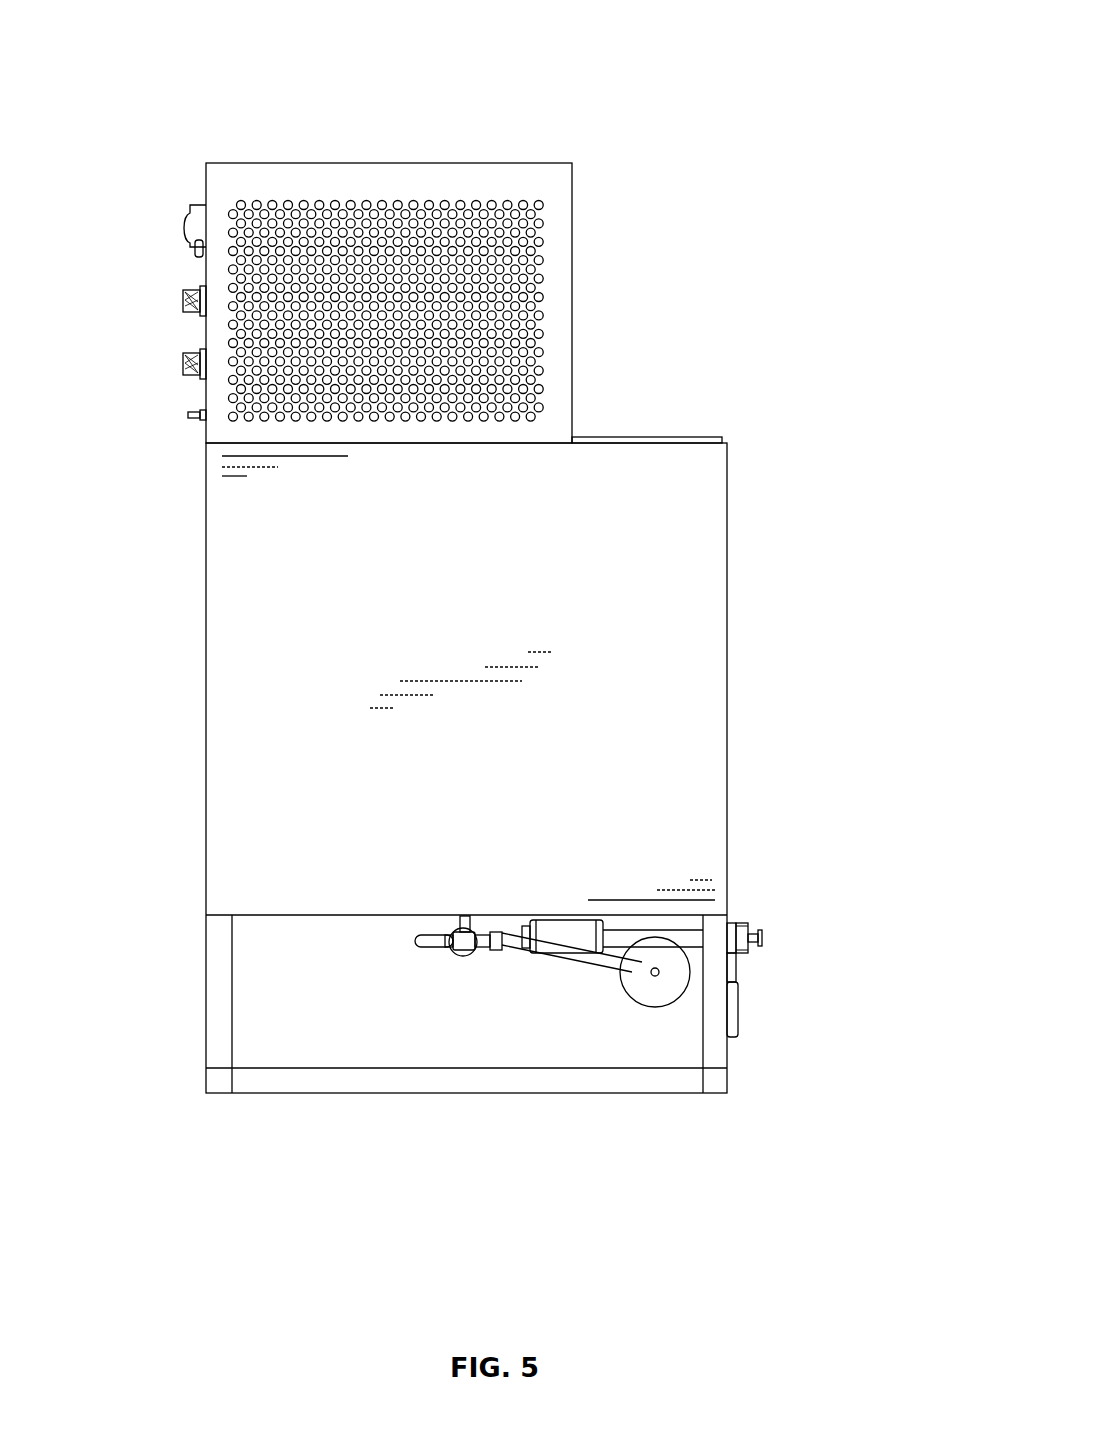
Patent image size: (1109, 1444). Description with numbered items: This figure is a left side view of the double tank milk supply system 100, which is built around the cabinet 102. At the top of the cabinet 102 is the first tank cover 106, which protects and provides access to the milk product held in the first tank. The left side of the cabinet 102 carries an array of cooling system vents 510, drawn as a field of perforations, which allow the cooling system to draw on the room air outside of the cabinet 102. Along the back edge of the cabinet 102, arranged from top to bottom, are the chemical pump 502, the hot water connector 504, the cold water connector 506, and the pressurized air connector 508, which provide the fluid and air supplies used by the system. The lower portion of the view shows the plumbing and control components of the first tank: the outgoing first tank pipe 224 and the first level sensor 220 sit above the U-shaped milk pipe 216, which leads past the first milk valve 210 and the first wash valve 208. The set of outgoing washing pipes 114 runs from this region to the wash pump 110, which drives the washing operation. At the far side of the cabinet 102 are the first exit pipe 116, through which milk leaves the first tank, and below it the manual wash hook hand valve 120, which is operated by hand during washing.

The double tank milk supply system 100 is at (822, 82).
The cabinet 102 is at (163, 553).
The first tank cover 106 is at (652, 437).
The wash pump 110 is at (643, 990).
The set of outgoing washing pipes 114 is at (557, 952).
The first exit pipe 116 is at (762, 943).
The manual wash hook hand valve 120 is at (735, 1008).
The first wash valve 208 is at (562, 930).
The first milk valve 210 is at (465, 957).
The U-shaped milk pipe 216 is at (425, 942).
The first level sensor 220 is at (458, 935).
The outgoing first tank pipe 224 is at (466, 918).
The chemical pump 502 is at (190, 207).
The hot water connector 504 is at (188, 290).
The cold water connector 506 is at (188, 352).
The pressurized air connector 508 is at (195, 410).
The cooling system vents 510 is at (537, 240).